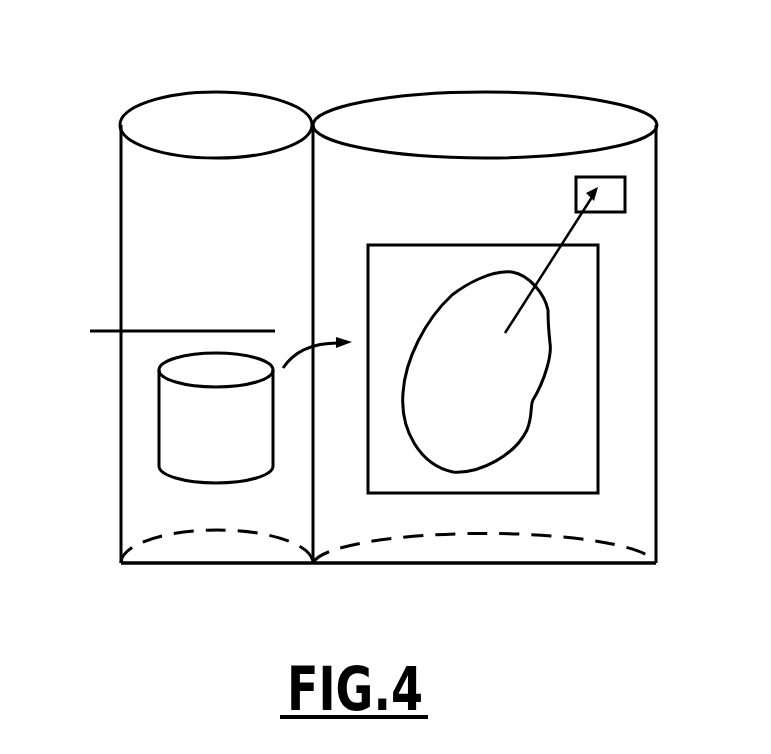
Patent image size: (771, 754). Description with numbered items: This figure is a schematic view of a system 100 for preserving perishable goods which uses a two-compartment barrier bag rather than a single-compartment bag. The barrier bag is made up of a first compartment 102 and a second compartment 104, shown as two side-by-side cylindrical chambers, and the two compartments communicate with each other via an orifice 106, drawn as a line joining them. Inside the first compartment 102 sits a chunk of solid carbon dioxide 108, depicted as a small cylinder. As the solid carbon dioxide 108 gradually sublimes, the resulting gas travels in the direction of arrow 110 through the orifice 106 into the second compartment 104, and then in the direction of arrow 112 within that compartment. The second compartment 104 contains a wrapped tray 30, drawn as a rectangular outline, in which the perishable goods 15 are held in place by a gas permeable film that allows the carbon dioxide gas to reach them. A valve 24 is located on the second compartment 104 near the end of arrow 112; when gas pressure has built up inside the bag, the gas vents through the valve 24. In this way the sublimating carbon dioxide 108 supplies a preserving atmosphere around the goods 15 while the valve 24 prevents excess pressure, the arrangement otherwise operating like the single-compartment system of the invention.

The imaging system 100 is at (326, 64).
The compartment 102 is at (145, 181).
The compartment 104 is at (625, 473).
The orifice 106 is at (157, 332).
The chunk of solid carbon dioxide 108 is at (176, 437).
The arrow 110 is at (315, 342).
The arrow 112 is at (564, 240).
The wrapped tray 30 is at (372, 195).
The valve 24 is at (600, 202).
The perishable goods 15 is at (515, 424).